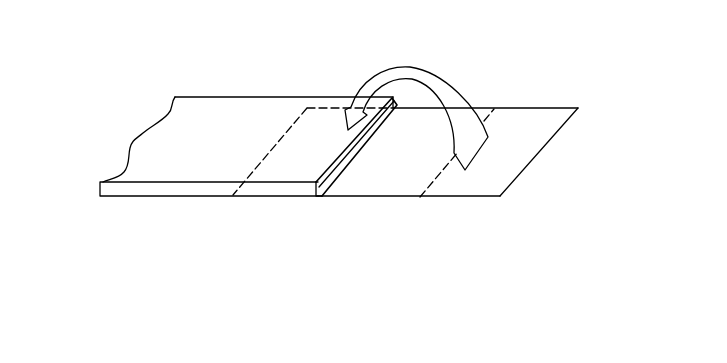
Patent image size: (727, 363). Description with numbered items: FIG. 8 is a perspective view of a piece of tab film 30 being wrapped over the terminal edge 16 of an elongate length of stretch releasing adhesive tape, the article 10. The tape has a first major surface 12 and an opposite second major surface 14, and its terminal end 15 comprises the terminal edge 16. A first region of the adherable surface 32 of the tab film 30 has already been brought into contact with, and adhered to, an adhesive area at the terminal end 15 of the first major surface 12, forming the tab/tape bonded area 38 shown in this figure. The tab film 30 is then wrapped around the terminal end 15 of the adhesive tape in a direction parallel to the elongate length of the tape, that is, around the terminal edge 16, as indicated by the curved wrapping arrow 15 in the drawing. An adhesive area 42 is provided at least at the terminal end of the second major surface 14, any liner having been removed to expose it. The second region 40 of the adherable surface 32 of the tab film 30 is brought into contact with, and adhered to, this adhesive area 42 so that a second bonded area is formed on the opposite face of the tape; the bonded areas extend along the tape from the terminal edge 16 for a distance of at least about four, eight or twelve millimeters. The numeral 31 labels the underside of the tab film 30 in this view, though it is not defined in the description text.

The article 10 is at (158, 50).
The first major surface 12 is at (128, 197).
The second major surface 14 is at (260, 112).
The terminal end 15 is at (351, 80).
The terminal edge 16 is at (340, 183).
The tab film 30 is at (548, 84).
The bottom surface of second panel 31 is at (455, 224).
The adherable surface 32 is at (407, 183).
The tab/tape bonded area 38 is at (291, 199).
The second region 40 is at (505, 172).
The adhesive area 42 is at (283, 170).